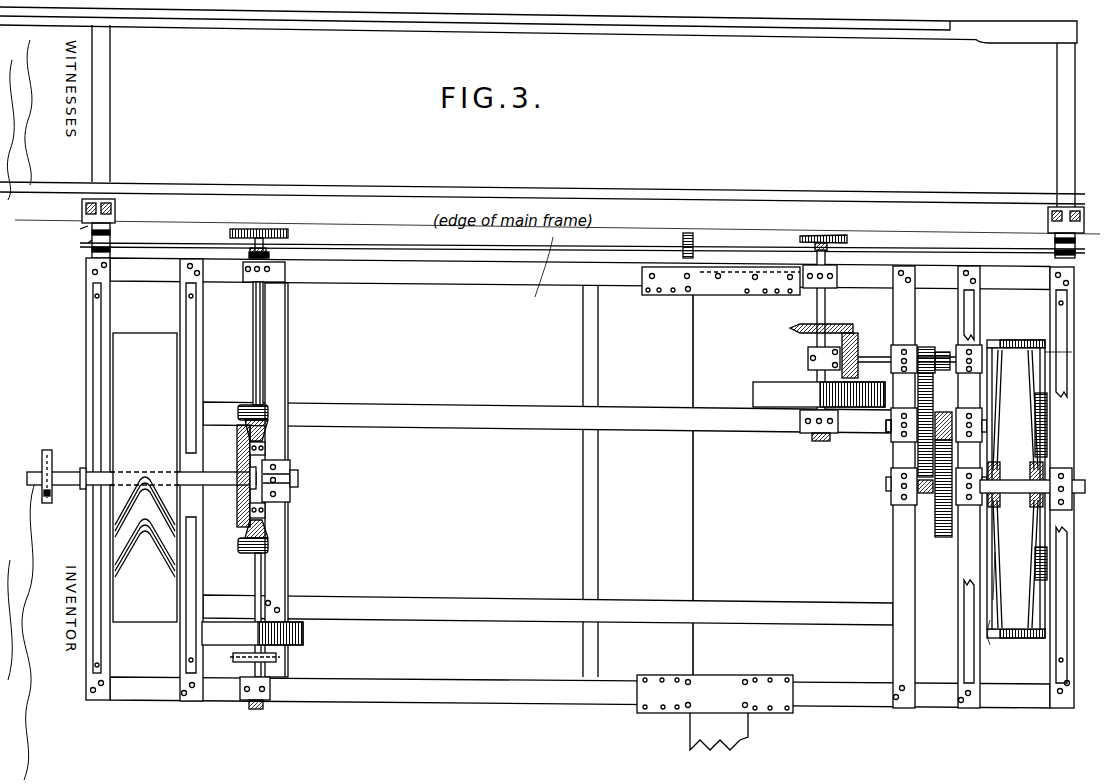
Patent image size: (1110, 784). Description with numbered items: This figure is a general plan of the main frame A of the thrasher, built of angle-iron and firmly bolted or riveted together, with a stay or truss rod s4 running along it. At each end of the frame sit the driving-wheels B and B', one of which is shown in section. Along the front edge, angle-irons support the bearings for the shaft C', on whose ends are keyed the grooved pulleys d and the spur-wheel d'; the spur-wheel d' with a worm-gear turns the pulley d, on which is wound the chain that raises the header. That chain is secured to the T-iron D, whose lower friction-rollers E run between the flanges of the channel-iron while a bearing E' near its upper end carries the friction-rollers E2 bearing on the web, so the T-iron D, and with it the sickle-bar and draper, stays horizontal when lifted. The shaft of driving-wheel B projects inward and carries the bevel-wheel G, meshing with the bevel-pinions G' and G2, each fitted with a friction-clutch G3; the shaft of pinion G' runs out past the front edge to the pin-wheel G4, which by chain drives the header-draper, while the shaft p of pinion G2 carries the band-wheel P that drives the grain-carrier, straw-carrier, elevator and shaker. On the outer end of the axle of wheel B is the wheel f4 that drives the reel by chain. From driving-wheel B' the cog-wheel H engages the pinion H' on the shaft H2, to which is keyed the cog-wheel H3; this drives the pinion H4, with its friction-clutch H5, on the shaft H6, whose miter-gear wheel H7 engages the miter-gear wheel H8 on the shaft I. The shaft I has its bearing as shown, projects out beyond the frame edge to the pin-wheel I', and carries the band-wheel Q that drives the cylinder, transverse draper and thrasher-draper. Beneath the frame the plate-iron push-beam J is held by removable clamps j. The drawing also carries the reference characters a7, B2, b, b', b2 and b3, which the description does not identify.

The main frame A is at (86, 334).
The frame block a7 is at (538, 25).
The driving-wheel B is at (145, 477).
The driving-wheel B' is at (1016, 488).
The rack gear B2 is at (1045, 565).
The guide b is at (993, 644).
The guide rail b' is at (577, 492).
The guide bar b2 is at (1045, 355).
The guide link b3 is at (996, 560).
The shaft C' is at (539, 276).
The T-iron D is at (1048, 212).
The grooved pulley d is at (582, 230).
The spur-wheel d' is at (696, 233).
The friction-rollers E is at (86, 228).
The bearing E' is at (58, 236).
The friction-rollers E2 is at (88, 243).
The wheel f4 is at (50, 452).
The bevel-wheel G is at (229, 476).
The bevel-pinion G' is at (280, 435).
The bevel-pinion G2 is at (270, 528).
The friction-clutches G3 is at (270, 412).
The pin-wheel G4 is at (262, 229).
The cog-wheel H is at (938, 503).
The pinion H' is at (944, 413).
The shaft H2 is at (889, 432).
The cog-wheel H3 is at (922, 458).
The pinion H4 is at (926, 347).
The friction-clutch H5 is at (942, 352).
The shaft H6 is at (872, 356).
The miter-gear wheel H7 is at (858, 368).
The miter-gear wheel H8 is at (790, 328).
The shaft I is at (825, 342).
The pin-wheel I' is at (839, 240).
The push-beam J is at (648, 480).
The clamps j is at (724, 292).
The band-wheel P is at (252, 665).
The shaft p is at (255, 578).
The band-wheel Q is at (819, 394).
The truss rod s4 is at (93, 388).